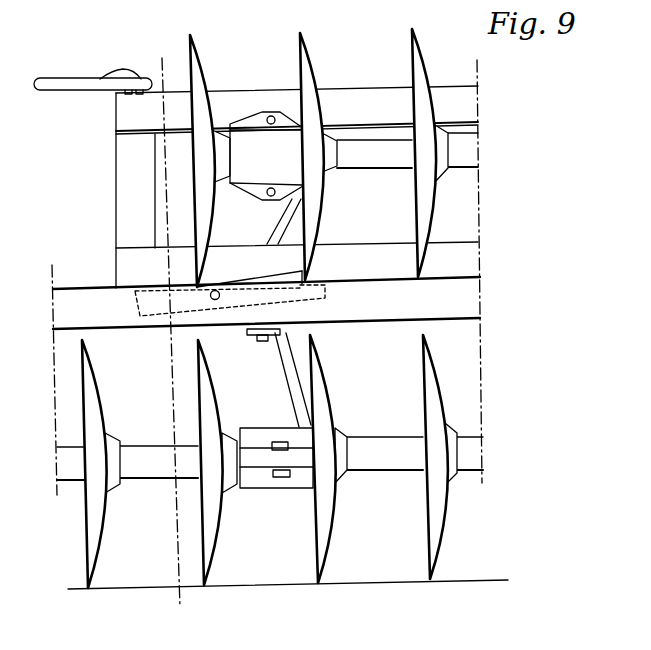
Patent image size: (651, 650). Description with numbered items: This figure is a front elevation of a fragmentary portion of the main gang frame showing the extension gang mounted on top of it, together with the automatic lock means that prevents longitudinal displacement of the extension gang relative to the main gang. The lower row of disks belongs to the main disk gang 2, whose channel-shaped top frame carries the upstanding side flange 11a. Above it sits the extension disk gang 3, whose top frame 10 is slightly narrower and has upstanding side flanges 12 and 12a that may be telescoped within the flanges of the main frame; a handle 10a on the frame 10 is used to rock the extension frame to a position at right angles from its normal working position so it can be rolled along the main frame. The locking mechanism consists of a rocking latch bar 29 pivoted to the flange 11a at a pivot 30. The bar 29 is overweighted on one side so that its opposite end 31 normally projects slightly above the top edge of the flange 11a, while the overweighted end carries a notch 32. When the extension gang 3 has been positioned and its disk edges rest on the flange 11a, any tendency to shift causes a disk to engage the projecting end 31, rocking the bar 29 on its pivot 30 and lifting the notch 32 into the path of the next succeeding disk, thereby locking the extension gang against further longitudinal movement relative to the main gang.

The main disk gang 2 is at (282, 459).
The extension disk gang 3 is at (334, 158).
The top frame 10 is at (171, 338).
The handle 10a is at (57, 88).
The side flange 11a is at (378, 310).
The side flange 12 is at (369, 258).
The side flange 12a is at (345, 100).
The rocking latch bar 29 is at (245, 280).
The pivot 30 is at (217, 300).
The projecting end 31 is at (147, 282).
The notch 32 is at (300, 272).